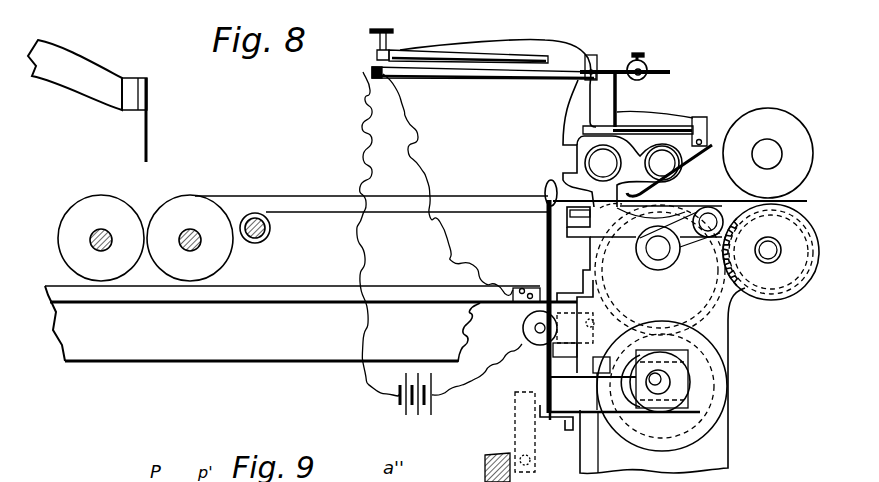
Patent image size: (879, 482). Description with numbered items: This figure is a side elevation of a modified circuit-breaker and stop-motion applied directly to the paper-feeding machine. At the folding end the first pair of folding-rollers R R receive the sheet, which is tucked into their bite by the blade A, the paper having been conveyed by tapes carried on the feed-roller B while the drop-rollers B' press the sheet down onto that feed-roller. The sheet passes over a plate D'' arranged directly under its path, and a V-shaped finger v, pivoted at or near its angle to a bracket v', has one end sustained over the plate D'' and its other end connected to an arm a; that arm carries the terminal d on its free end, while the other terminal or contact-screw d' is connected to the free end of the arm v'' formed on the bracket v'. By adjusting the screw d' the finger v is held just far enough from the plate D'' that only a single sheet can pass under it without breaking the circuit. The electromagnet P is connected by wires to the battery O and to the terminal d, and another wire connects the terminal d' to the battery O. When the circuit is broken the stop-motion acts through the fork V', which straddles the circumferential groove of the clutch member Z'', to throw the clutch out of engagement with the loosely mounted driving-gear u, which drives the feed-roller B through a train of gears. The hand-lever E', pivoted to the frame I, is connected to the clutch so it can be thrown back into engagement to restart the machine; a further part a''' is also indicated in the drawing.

The blade A is at (150, 144).
The contact-screw d' is at (393, 40).
The terminal d is at (358, 66).
The arm v'' is at (498, 74).
The arm a is at (484, 76).
The bracket v' is at (647, 117).
The drop-rollers B' is at (768, 153).
The V-shaped finger v is at (669, 170).
The plate D'' is at (660, 270).
The feed-roller B is at (771, 252).
The hand-lever E' is at (538, 296).
The electromagnet P is at (526, 332).
The folding-rollers R is at (145, 238).
The frame I is at (311, 324).
The battery O is at (435, 254).
The fork V' is at (620, 403).
The movable clutch member Z'' is at (671, 381).
The driving-gear u is at (662, 386).
The support a''' is at (523, 437).